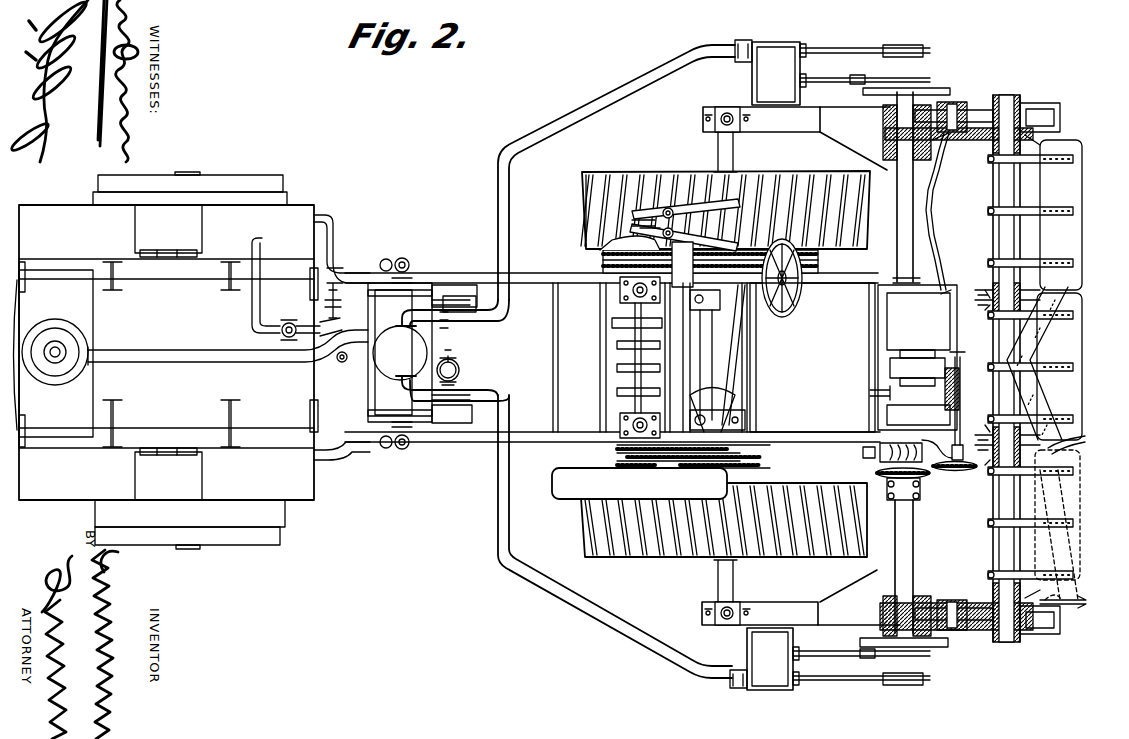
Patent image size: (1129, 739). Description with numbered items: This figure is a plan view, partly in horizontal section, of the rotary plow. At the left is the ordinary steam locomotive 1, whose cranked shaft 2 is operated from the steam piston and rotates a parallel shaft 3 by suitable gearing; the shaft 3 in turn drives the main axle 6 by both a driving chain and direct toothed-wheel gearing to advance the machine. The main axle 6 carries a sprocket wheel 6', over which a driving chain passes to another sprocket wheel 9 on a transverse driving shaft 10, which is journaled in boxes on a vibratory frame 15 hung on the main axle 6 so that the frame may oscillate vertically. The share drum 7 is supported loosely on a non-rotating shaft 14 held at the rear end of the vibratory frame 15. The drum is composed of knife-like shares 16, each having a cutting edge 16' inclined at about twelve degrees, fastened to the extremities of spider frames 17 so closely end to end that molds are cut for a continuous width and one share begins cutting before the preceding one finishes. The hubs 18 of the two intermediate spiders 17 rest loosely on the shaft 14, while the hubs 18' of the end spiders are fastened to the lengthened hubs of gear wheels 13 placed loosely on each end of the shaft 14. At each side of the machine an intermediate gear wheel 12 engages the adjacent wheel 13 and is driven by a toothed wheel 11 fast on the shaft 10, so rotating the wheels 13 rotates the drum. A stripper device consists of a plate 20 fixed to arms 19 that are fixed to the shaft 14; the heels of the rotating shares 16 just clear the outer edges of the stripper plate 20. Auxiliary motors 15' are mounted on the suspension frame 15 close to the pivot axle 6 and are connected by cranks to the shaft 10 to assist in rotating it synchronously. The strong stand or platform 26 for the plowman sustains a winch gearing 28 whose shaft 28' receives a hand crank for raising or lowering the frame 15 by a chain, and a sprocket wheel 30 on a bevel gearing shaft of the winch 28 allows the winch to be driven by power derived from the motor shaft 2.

The steam locomotive 1 is at (192, 360).
The cranked shaft 2 is at (600, 405).
The parallel shaft 3 is at (673, 315).
The main axle 6 is at (735, 366).
The sprocket wheel 6' is at (710, 363).
The roller 7 is at (660, 185).
The sprocket wheel 9 is at (920, 476).
The transverse driving shaft 10 is at (913, 540).
The toothed wheel 11 is at (882, 118).
The intermediate gear wheel 12 is at (978, 108).
The gear wheel 13 is at (1040, 110).
The non-rotating shaft 14 is at (995, 498).
The vibratory frame 15 is at (801, 366).
The auxiliary motor 15' is at (830, 379).
The share 16 is at (959, 237).
The cutting edge 16' is at (1042, 443).
The spider frame 17 is at (960, 140).
The hub 18 is at (1036, 372).
The hub 18' is at (1029, 357).
The arm 19 is at (1032, 164).
The stripper plate 20 is at (1058, 360).
The stand or platform 26 is at (812, 357).
The winch gearing 28 is at (917, 357).
The winch shaft 28' is at (898, 397).
The sprocket wheel 30 is at (960, 474).